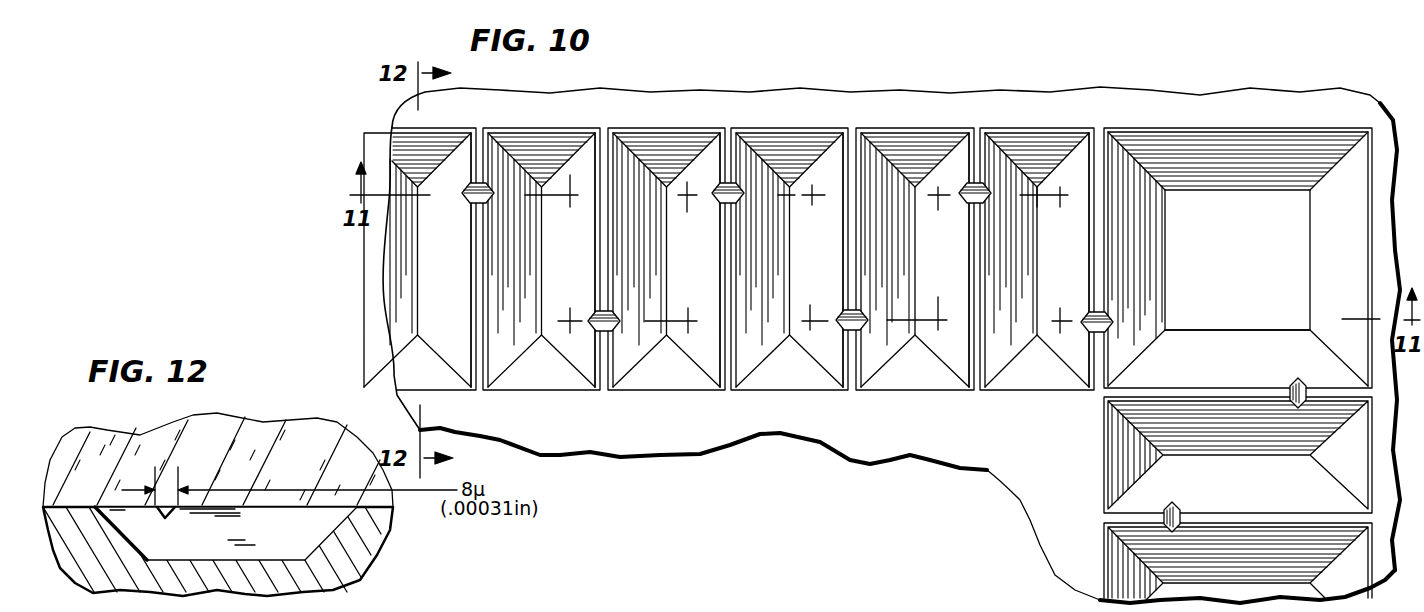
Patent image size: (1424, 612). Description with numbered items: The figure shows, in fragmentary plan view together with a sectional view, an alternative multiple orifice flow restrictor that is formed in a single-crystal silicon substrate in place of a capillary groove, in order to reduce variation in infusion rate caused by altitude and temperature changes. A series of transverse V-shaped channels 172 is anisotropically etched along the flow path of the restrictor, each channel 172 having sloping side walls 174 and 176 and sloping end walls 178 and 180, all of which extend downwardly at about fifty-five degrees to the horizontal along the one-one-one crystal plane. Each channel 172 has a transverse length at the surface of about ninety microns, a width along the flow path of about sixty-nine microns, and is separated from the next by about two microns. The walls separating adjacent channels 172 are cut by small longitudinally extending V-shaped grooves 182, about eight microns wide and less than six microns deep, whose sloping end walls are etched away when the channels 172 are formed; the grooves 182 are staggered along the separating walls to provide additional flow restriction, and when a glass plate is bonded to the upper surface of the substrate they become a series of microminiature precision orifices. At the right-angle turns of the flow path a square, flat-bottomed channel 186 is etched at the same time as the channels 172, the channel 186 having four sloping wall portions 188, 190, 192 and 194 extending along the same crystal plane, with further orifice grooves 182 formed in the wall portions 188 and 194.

In FIG. 10, the transverse V-shaped channel 172 is at (533, 260).
In FIG. 10, the sloping side wall 174 is at (502, 158).
In FIG. 10, the sloping side wall 176 is at (585, 160).
In FIG. 12, the sloping side wall 176 is at (303, 530).
In FIG. 10, the sloping end wall 178 is at (541, 142).
In FIG. 10, the sloping end wall 180 is at (552, 380).
In FIG. 12, the longitudinally extending V-shaped groove 182 is at (170, 505).
In FIG. 10, the square flat bottomed channel 186 is at (1220, 273).
In FIG. 10, the sloping wall portion 188 is at (1128, 182).
In FIG. 10, the sloping wall portion 190 is at (1255, 145).
In FIG. 10, the sloping wall portion 192 is at (1345, 183).
In FIG. 10, the sloping wall portion 194 is at (1322, 367).